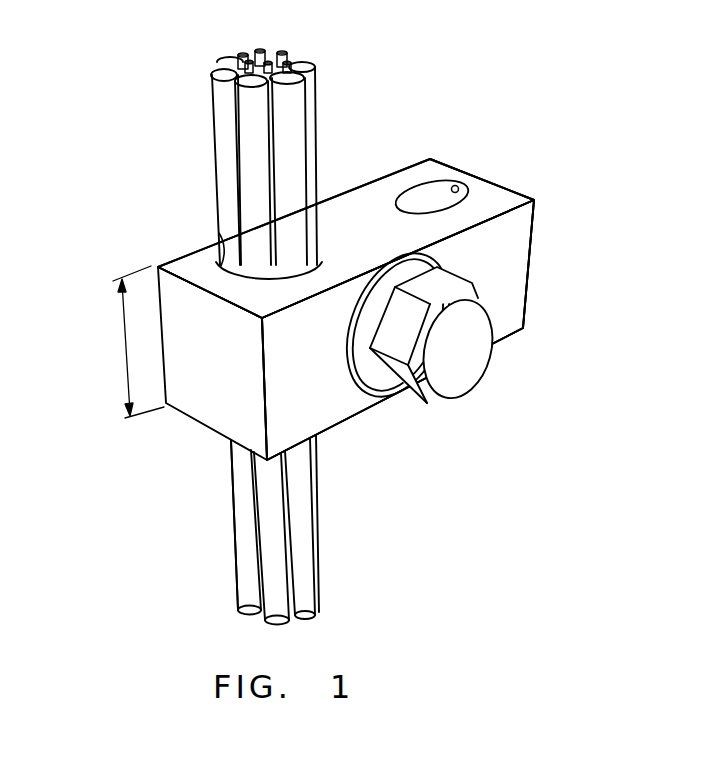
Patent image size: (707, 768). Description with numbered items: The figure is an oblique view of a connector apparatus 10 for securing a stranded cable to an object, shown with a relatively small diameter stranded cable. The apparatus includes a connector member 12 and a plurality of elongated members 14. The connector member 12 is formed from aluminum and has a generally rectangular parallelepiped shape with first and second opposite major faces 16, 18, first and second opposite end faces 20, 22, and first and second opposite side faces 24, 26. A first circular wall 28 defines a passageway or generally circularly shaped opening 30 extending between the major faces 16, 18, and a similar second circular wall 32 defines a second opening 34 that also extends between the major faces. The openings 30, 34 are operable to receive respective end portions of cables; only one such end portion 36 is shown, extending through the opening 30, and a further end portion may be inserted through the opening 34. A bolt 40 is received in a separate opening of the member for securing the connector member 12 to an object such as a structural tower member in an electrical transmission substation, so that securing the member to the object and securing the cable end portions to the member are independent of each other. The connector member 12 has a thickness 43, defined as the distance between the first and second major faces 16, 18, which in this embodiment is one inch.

The connector apparatus 10 is at (436, 100).
The connector member 12 is at (205, 398).
The elongated members 14 is at (281, 50).
The first major face 16 is at (433, 168).
The second major face 18 is at (358, 413).
The first end face 20 is at (243, 448).
The second end face 22 is at (532, 253).
The first side face 24 is at (515, 297).
The second side face 26 is at (182, 252).
The first circular wall 28 is at (218, 228).
The opening 30 is at (318, 262).
The second circular wall 32 is at (456, 185).
The opening 34 is at (462, 195).
The end portion 36 is at (217, 90).
The bolt 40 is at (457, 353).
The thickness 43 is at (123, 348).